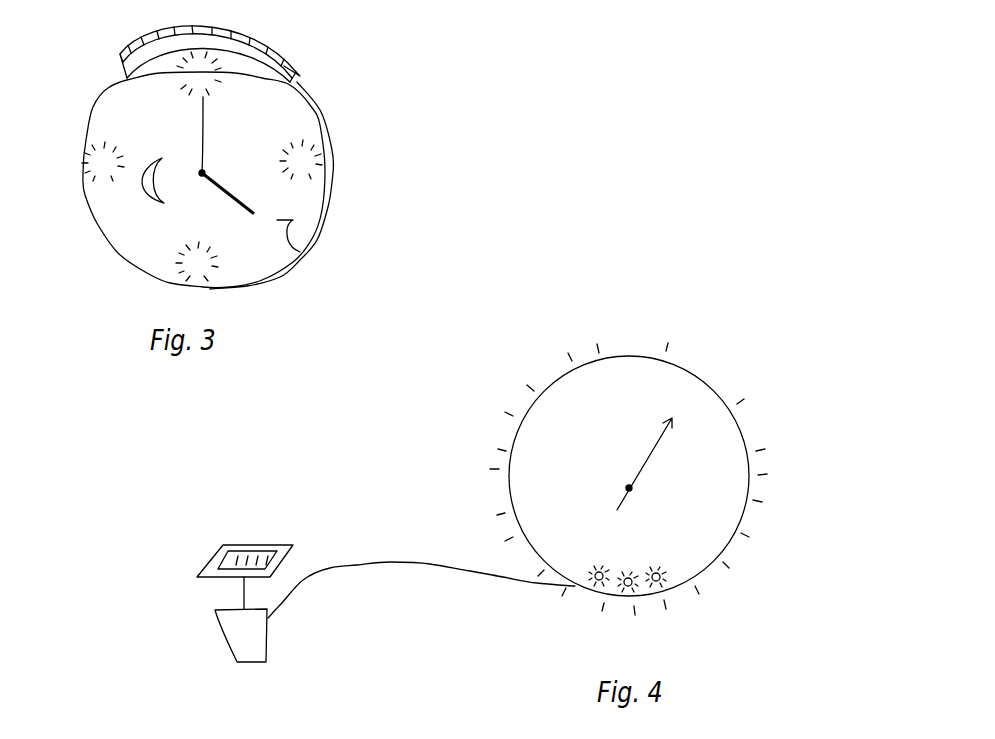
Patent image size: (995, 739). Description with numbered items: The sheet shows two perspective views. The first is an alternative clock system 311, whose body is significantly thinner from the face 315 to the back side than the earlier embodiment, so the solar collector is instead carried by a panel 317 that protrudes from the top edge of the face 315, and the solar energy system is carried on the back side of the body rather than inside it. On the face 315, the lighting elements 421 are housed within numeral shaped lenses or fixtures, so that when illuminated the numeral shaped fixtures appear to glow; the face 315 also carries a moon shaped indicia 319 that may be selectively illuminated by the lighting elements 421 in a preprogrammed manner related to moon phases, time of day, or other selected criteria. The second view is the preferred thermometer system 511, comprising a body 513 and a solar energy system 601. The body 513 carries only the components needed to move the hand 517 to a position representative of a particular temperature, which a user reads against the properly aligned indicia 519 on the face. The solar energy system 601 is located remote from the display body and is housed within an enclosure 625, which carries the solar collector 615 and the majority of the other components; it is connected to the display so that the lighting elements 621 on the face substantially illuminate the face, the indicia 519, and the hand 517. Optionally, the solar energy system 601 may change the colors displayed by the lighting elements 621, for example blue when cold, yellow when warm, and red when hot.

In FIG. 3, the clock system 311 is at (366, 149).
In FIG. 3, the face 315 is at (300, 252).
In FIG. 3, the panel 317 is at (289, 66).
In FIG. 3, the moon shaped indicia 319 is at (141, 193).
In FIG. 3, the lighting elements 421 is at (180, 70).
In FIG. 4, the thermometer system 511 is at (701, 342).
In FIG. 4, the body 513 is at (739, 432).
In FIG. 4, the hand 517 is at (645, 463).
In FIG. 4, the indicia 519 is at (548, 402).
In FIG. 4, the lighting elements 621 is at (598, 584).
In FIG. 4, the solar energy system 601 is at (337, 600).
In FIG. 4, the solar collector 615 is at (245, 544).
In FIG. 4, the enclosure 625 is at (267, 637).